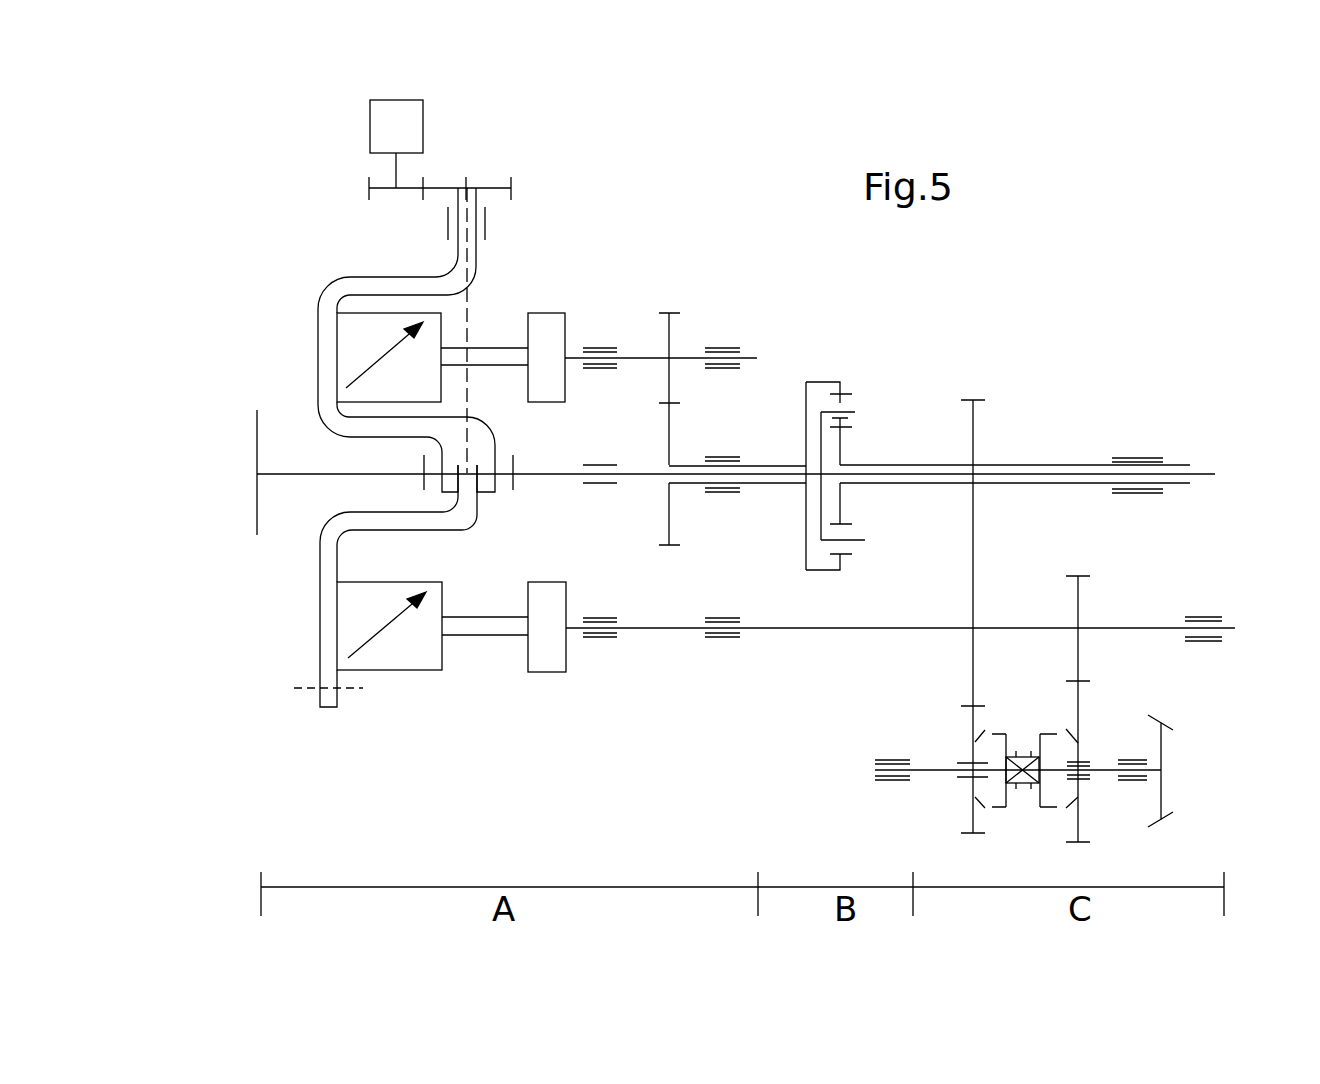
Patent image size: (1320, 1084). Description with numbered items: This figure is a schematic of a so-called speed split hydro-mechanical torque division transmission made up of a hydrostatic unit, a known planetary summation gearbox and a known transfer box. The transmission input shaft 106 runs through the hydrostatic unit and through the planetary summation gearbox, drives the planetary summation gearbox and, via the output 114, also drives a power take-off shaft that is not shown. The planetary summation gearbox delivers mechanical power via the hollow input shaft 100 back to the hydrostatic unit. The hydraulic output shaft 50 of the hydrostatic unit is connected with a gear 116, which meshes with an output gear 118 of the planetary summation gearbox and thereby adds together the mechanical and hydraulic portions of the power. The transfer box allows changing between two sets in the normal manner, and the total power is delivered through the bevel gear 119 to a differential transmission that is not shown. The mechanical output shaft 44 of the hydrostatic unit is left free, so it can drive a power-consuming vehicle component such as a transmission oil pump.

The mechanical output shaft 44 is at (688, 358).
The hydraulic output shaft 50 is at (655, 628).
The hollow input shaft 100 is at (775, 465).
The transmission input shaft 106 is at (297, 474).
The output 114 is at (1205, 473).
The gear 116 is at (973, 672).
The output gear 118 is at (973, 423).
The bevel gear 119 is at (1161, 797).